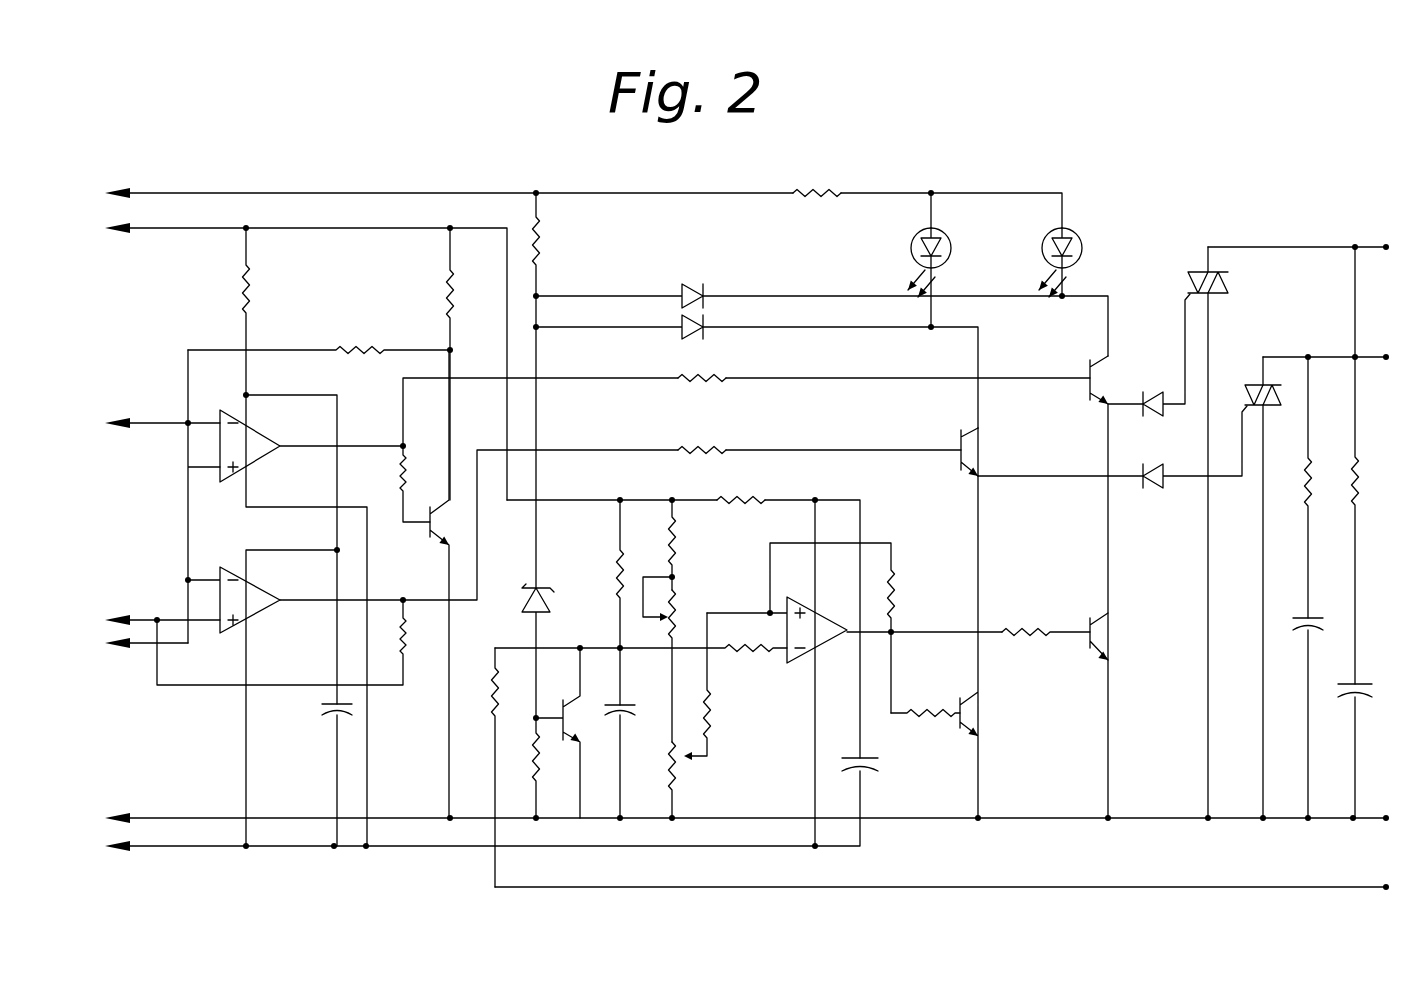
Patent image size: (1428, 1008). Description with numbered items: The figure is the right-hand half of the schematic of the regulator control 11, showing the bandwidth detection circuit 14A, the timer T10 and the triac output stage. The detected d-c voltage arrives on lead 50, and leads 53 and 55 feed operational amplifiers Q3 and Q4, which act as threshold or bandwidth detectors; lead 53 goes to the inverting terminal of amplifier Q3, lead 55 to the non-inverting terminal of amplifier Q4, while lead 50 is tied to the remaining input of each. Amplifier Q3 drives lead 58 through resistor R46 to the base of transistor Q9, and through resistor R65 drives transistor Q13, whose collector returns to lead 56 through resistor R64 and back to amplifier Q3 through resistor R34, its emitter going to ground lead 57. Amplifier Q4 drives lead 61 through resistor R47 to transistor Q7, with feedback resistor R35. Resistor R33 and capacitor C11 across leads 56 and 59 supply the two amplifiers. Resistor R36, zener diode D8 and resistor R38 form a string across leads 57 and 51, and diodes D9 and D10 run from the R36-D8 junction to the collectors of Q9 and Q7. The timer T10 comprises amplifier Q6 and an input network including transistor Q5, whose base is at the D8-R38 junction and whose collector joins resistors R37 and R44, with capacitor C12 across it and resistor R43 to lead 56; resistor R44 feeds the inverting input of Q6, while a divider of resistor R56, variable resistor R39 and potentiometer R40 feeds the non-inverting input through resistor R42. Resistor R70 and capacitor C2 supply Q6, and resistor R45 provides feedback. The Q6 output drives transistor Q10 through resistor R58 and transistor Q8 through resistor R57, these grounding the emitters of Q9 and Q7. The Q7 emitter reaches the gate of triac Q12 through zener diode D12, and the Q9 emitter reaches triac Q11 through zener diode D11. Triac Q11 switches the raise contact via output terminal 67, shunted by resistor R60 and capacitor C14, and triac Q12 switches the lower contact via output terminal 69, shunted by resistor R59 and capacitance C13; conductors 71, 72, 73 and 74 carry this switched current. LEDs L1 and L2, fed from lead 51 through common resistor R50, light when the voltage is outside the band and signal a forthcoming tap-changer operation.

The control circuit 11 is at (573, 178).
The bandwidth detection circuit 14A is at (178, 385).
The lead 50 is at (136, 649).
The lead 51 is at (341, 197).
The lead 53 is at (169, 413).
The lead 55 is at (128, 623).
The lead 56 is at (227, 227).
The ground lead 57 is at (201, 815).
The lead 58 is at (599, 377).
The lead 59 is at (201, 845).
The lead 61 is at (596, 448).
The output terminal 67 is at (1396, 238).
The output terminal 69 is at (1162, 887).
The conductor 71 is at (1301, 247).
The conductor 72 is at (1208, 592).
The conductor 73 is at (1284, 352).
The conductor 74 is at (1263, 572).
The timer T10 is at (868, 530).
The operational amplifier Q3 is at (262, 420).
The operational amplifier Q4 is at (262, 588).
The NPN transistor Q5 is at (570, 728).
The operational amplifier Q6 is at (824, 648).
The NPN transistor Q7 is at (972, 452).
The NPN transistor Q8 is at (972, 716).
The NPN transistor Q9 is at (1098, 382).
The NPN transistor Q10 is at (1098, 636).
The triac Q11 is at (1230, 282).
The triac Q12 is at (1278, 398).
The NPN transistor Q13 is at (432, 520).
The resistor R33 is at (254, 289).
The resistor R34 is at (380, 325).
The resistor R35 is at (408, 640).
The resistor R36 is at (580, 226).
The resistor R37 is at (478, 684).
The resistor R38 is at (538, 774).
The variable resistor R39 is at (678, 600).
The potentiometer R40 is at (676, 780).
The resistor R42 is at (710, 720).
The resistor R43 is at (616, 558).
The resistor R44 is at (748, 662).
The resistor R45 is at (892, 582).
The resistor R46 is at (702, 372).
The resistor R47 is at (720, 442).
The resistor R50 is at (816, 202).
The resistor R56 is at (678, 538).
The resistor R57 is at (938, 698).
The resistor R58 is at (1040, 616).
The resistor R59 is at (1308, 494).
The resistor R60 is at (1360, 480).
The resistor R64 is at (485, 276).
The resistor R65 is at (386, 472).
The resistor R70 is at (752, 496).
The capacitor C2 is at (876, 772).
The capacitor C11 is at (316, 714).
The capacitor C12 is at (628, 720).
The capacitance C13 is at (1300, 616).
The capacitor C14 is at (1386, 670).
The zener diode D8 is at (548, 618).
The diode D9 is at (694, 284).
The diode D10 is at (696, 338).
The zener diode D11 is at (1144, 422).
The zener diode D12 is at (1144, 502).
The light emitting diode L1 is at (912, 242).
The light emitting diode L2 is at (1044, 240).